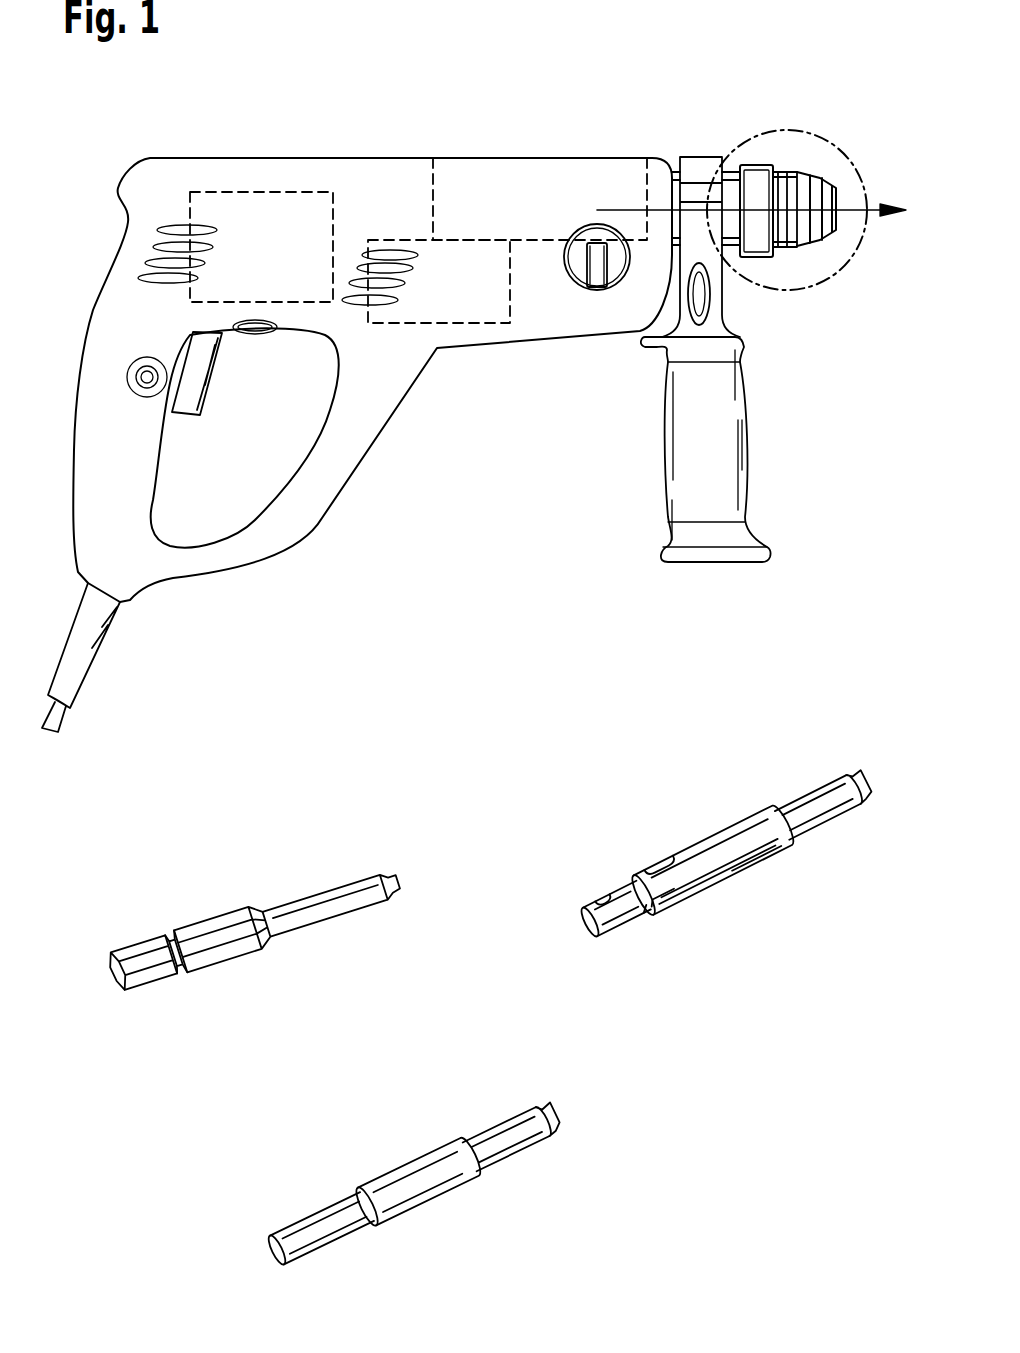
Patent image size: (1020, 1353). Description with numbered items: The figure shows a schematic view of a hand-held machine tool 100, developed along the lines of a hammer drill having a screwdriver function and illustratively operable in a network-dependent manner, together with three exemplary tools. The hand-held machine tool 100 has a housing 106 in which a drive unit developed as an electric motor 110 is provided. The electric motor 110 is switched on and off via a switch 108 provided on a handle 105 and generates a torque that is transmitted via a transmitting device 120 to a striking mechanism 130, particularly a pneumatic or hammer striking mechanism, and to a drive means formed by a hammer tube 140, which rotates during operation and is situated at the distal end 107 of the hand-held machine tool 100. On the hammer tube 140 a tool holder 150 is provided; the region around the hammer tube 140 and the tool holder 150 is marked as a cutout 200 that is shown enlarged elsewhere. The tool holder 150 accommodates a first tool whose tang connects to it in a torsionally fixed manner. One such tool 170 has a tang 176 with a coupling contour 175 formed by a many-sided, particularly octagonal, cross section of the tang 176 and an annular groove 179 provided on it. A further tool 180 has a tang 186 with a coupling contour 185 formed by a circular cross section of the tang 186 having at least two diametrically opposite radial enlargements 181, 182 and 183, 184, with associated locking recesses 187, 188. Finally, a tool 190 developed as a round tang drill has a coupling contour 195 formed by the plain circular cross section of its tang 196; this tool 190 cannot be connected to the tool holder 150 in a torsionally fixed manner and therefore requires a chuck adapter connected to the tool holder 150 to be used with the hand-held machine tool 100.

The hand-held machine tool 100 is at (132, 149).
The handle 105 is at (118, 345).
The housing 106 is at (325, 523).
The distal end 107 is at (750, 157).
The switch 108 is at (196, 362).
The electric motor 110 is at (258, 190).
The transmitting device 120 is at (437, 323).
The striking mechanism 130 is at (433, 188).
The hammer tube 140 is at (735, 222).
The tool holder 150 is at (805, 158).
The cutout 200 is at (840, 268).
The tool 170 is at (265, 856).
The coupling contour 175 is at (208, 973).
The tang 176 is at (132, 963).
The annular groove 179 is at (170, 968).
The tool 180 is at (770, 752).
The radial enlargement 181 is at (603, 893).
The radial enlargement 182 is at (700, 848).
The radial enlargement 183 is at (634, 926).
The radial enlargement 184 is at (718, 882).
The coupling contour 185 is at (642, 856).
The tang 186 is at (737, 912).
The locking recess 187 is at (668, 890).
The locking recess 188 is at (648, 895).
The tool 190 is at (458, 1087).
The coupling contour 195 is at (334, 1189).
The tang 196 is at (372, 1210).